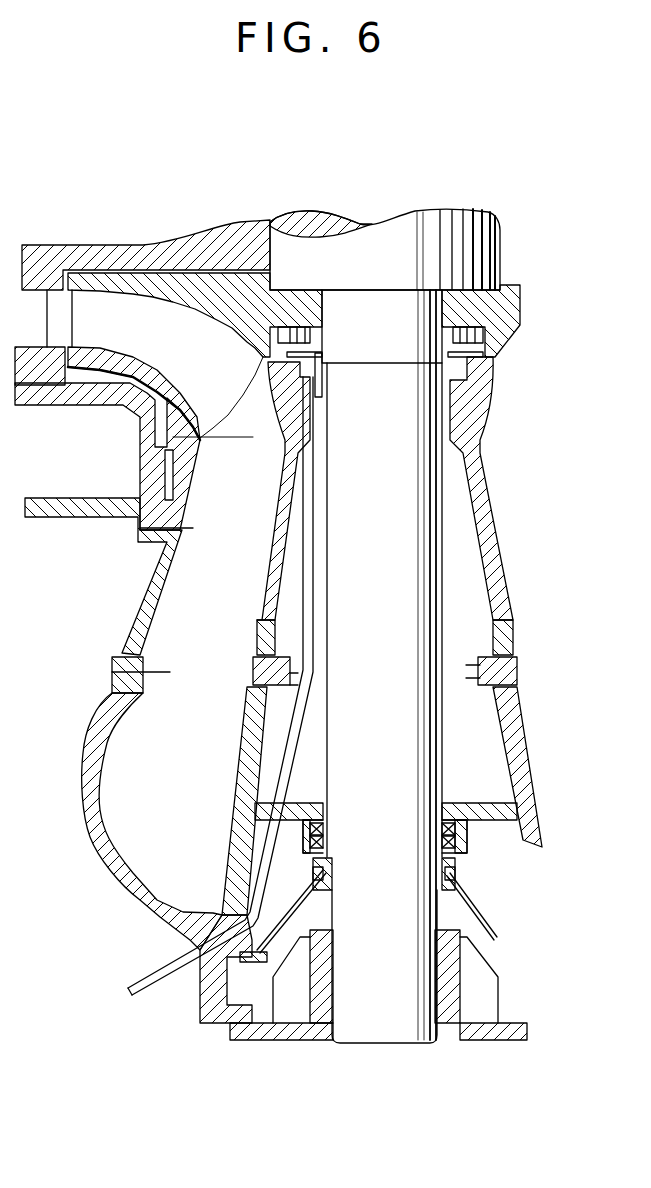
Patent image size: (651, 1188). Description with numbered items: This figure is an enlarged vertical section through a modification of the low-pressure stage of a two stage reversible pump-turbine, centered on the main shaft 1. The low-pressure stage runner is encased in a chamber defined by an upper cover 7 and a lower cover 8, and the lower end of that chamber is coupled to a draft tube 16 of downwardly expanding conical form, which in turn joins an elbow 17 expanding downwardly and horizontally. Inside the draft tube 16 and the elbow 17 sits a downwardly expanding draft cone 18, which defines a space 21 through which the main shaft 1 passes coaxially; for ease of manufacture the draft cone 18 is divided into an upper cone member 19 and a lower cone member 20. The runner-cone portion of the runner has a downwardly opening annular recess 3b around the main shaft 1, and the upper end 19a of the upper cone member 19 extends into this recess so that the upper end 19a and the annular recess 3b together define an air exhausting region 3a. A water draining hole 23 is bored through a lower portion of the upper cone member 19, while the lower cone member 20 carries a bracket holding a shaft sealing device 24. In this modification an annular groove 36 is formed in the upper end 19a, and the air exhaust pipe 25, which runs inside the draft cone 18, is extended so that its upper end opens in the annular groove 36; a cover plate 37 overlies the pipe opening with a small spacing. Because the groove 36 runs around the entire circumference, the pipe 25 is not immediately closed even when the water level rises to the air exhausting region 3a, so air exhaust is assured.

The main shaft 1 is at (433, 718).
The upper cover 7 is at (128, 252).
The lower cover 8 is at (82, 400).
The air exhausting region 3a is at (257, 347).
The annular recess 3b is at (493, 333).
The draft tube 16 is at (153, 607).
The elbow 17 is at (88, 852).
The draft cone 18 is at (236, 697).
The upper cone member 19 is at (277, 537).
The upper end of the upper cone member 19a is at (287, 380).
The lower cone member 20 is at (233, 863).
The space 21 is at (477, 583).
The water draining hole 23 is at (267, 633).
The shaft sealing device 24 is at (307, 840).
The air exhaust pipe 25 is at (277, 760).
The annular groove 36 is at (316, 373).
The cover plate 37 is at (313, 343).